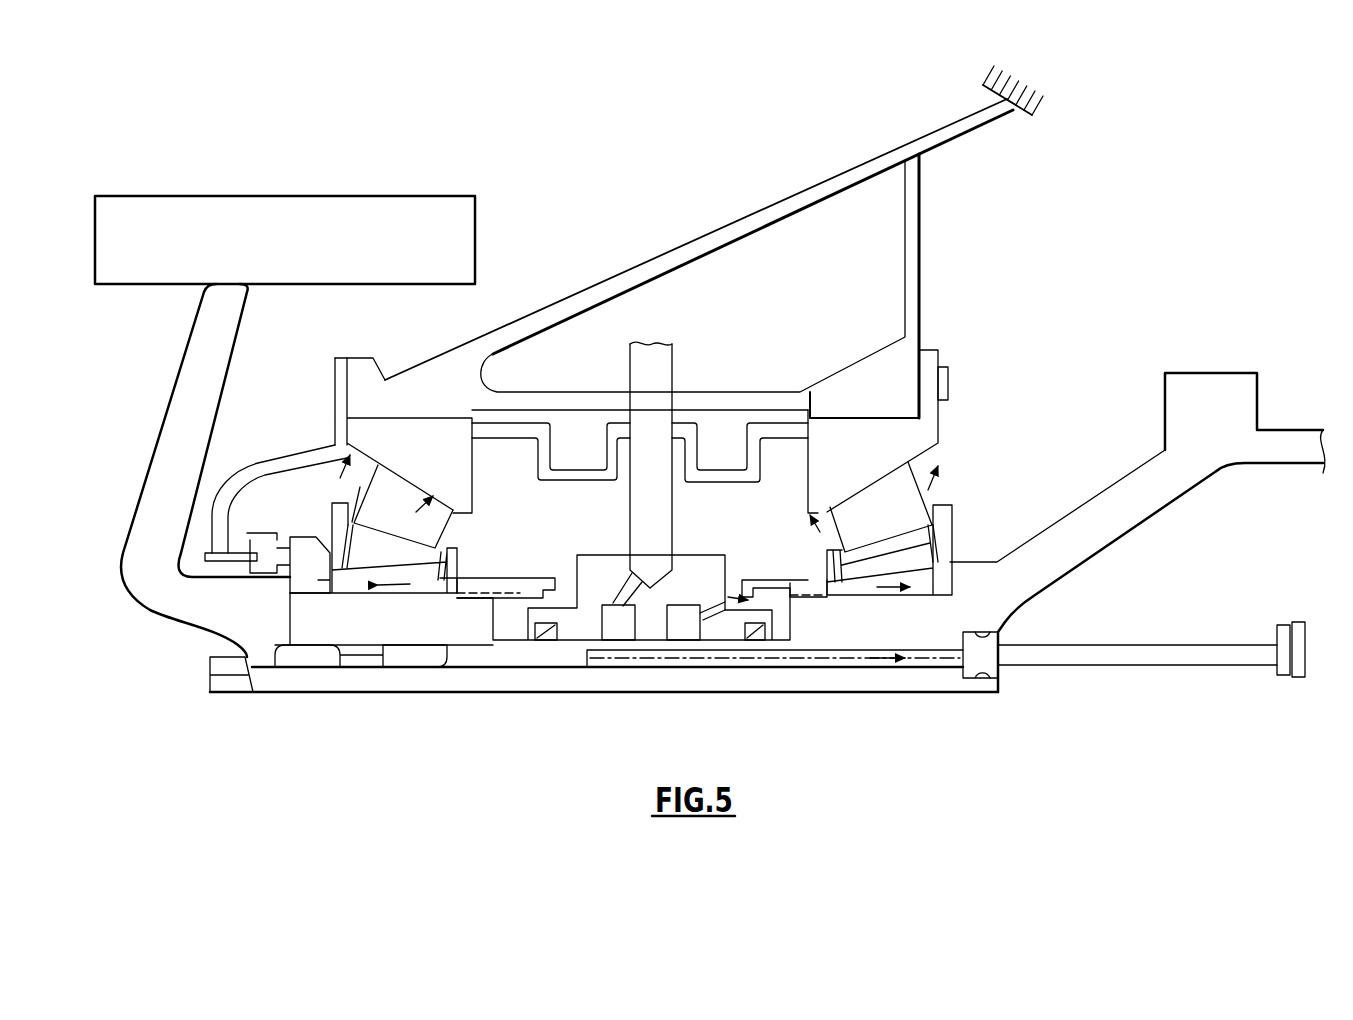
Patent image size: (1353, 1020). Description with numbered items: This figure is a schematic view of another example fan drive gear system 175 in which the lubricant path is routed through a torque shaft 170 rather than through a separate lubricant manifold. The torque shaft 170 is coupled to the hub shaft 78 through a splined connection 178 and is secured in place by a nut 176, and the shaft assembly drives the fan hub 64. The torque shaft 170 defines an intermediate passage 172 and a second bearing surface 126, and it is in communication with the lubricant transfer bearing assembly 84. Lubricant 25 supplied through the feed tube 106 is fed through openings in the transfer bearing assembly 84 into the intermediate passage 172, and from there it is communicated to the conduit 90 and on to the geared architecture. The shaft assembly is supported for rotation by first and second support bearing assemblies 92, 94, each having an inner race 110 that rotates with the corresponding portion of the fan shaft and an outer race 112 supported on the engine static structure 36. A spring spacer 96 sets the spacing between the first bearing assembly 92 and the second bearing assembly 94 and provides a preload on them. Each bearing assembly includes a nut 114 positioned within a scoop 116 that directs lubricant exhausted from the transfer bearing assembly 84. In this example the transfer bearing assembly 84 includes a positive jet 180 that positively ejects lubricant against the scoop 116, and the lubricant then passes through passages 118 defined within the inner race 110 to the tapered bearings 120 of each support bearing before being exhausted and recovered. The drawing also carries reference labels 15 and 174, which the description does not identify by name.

The pin 15 is at (655, 336).
The lubricant 25 is at (512, 612).
The engine static structure 36 is at (803, 176).
The fan hub 64 is at (152, 250).
The hub shaft 78 is at (190, 612).
The lubricant transfer bearing assembly 84 is at (686, 563).
The conduit 90 is at (1164, 670).
The first support bearing assembly 92 is at (958, 418).
The second support bearing assembly 94 is at (340, 478).
The spring spacer 96 is at (549, 421).
The feed tube 106 is at (634, 500).
The inner race 110 is at (368, 548).
The outer race 112 is at (392, 428).
The nut 114 is at (480, 582).
The scoop 116 is at (551, 576).
The passages 118 is at (450, 568).
The tapered bearings 120 is at (385, 502).
The second bearing surface 126 is at (653, 636).
The torque shaft 170 is at (1213, 390).
The intermediate passage 172 is at (796, 668).
The pipe 174 is at (267, 518).
The fan drive gear system 175 is at (1052, 260).
The nut 176 is at (206, 667).
The splined connection 178 is at (345, 670).
The positive jet 180 is at (713, 608).